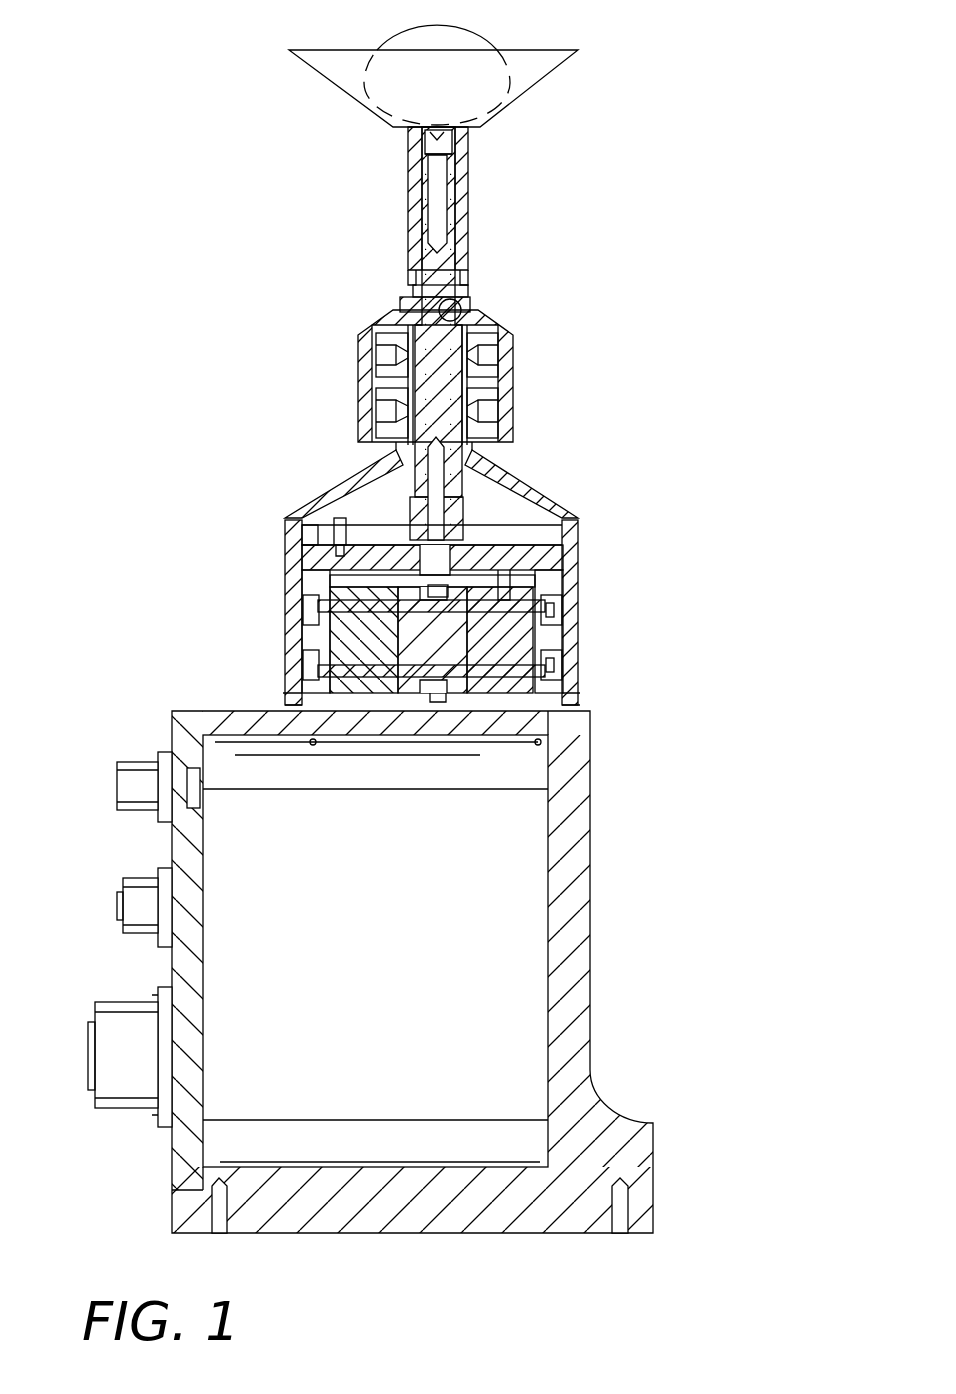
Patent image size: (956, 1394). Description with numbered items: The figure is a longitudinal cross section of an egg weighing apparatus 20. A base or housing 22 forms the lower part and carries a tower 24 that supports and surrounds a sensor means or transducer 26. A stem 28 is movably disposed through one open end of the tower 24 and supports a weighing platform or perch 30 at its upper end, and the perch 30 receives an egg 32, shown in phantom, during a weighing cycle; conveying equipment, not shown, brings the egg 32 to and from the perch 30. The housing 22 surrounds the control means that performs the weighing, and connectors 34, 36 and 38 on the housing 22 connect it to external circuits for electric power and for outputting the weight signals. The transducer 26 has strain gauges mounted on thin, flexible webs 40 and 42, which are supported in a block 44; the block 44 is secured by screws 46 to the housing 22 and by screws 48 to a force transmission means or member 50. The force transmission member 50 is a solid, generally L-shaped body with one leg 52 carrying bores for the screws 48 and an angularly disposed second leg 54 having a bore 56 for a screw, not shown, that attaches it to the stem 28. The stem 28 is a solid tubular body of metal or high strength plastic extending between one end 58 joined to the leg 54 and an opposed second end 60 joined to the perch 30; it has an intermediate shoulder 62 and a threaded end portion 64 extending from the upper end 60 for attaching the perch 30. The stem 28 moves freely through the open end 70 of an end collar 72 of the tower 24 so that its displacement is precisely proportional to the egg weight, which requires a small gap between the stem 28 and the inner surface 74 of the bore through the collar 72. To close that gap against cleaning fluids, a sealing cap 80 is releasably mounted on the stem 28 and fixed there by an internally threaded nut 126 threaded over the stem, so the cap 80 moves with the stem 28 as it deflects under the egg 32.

The egg weighing apparatus 20 is at (403, 611).
The base or housing 22 is at (590, 832).
The tower 24 is at (578, 585).
The sensor means or transducer 26 is at (313, 567).
The stem 28 is at (462, 247).
The weighing platform or perch 30 is at (333, 70).
The egg 32 is at (395, 40).
The connector 34 is at (118, 1012).
The connector 36 is at (136, 890).
The connector 38 is at (128, 770).
The flexible web 40 is at (585, 524).
The flexible web 42 is at (437, 698).
The block 44 is at (330, 632).
The screws 46 is at (556, 611).
The screws 48 is at (301, 600).
The force transmission means or member 50 is at (297, 553).
The leg 52 is at (316, 645).
The second leg 54 is at (380, 550).
The bore 56 is at (445, 585).
The end of stem 58 is at (362, 582).
The second end of stem 60 is at (470, 143).
The intermediate shoulder 62 is at (458, 290).
The threaded end portion 64 is at (420, 186).
The open end 70 is at (472, 322).
The end collar 72 is at (393, 370).
The inner surface 74 is at (418, 403).
The sealing cap 80 is at (361, 337).
The nut 126 is at (464, 293).